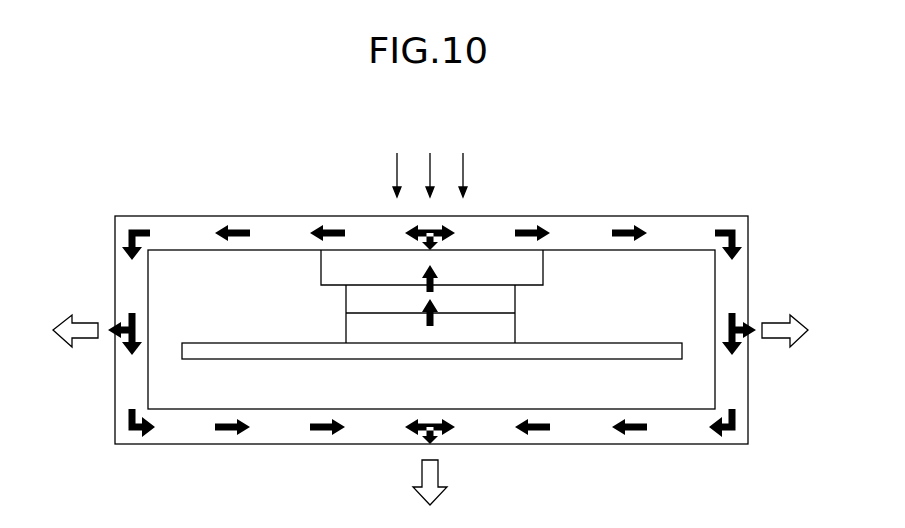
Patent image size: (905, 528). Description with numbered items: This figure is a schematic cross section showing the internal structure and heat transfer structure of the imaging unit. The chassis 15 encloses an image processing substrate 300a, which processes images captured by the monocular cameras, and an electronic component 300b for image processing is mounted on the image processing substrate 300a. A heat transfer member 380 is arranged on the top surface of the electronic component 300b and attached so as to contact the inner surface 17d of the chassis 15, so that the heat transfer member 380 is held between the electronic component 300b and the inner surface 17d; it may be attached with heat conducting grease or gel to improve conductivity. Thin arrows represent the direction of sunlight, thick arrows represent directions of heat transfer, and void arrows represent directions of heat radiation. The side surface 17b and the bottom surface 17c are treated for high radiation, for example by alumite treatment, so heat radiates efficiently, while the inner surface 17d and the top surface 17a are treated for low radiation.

The chassis 15 is at (742, 229).
The top surface 17a is at (268, 216).
The side surface 17b is at (115, 289).
The bottom surface 17c is at (268, 446).
The inner surface 17d is at (148, 287).
The heat transfer member 380 is at (346, 302).
The image processing substrate 300a is at (598, 359).
The electronic component 300b is at (515, 325).